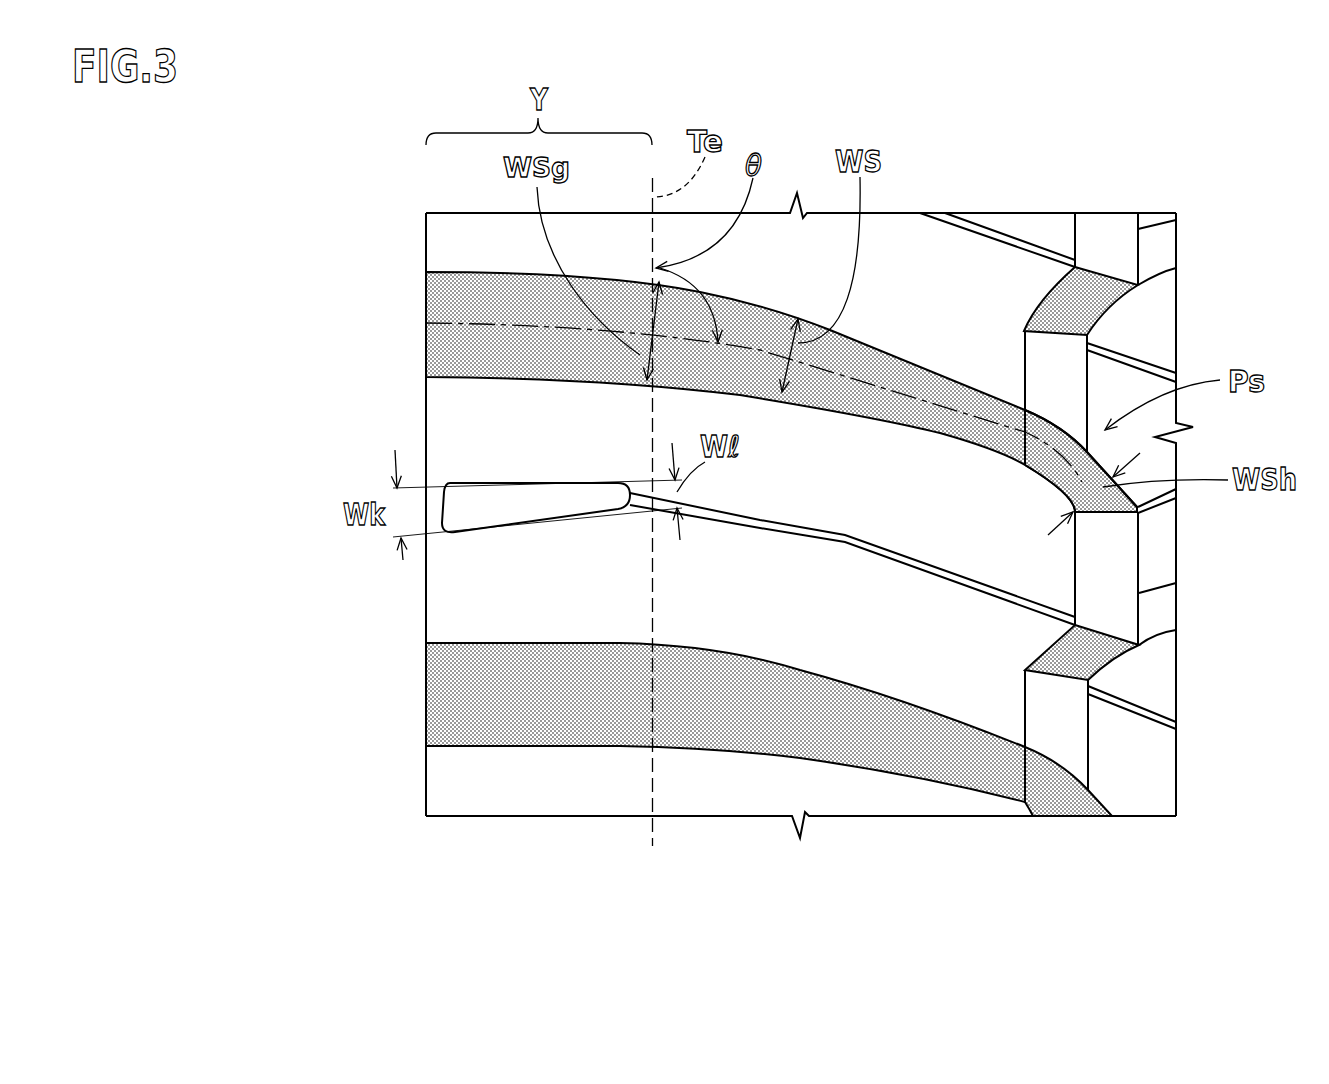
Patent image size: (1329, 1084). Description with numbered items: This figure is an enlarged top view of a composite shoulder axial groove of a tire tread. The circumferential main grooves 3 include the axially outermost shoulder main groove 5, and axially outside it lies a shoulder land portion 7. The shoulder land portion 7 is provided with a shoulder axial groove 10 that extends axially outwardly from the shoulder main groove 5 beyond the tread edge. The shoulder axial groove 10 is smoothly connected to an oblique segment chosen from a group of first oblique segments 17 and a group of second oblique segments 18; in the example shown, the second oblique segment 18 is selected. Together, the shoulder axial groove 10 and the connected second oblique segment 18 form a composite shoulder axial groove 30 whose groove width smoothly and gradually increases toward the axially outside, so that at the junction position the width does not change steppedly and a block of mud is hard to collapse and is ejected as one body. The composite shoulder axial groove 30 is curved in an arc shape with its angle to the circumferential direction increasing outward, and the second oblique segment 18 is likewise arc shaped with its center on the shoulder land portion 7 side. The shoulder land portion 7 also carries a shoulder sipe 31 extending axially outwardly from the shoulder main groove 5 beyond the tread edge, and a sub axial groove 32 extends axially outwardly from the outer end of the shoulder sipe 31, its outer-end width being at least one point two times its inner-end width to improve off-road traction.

The circumferential main groove 3 is at (1048, 463).
The shoulder main groove 5 is at (1103, 232).
The shoulder land portion 7 is at (963, 185).
The shoulder axial groove 10 is at (903, 425).
The first oblique segment 17 is at (1088, 680).
The second oblique segment 18 is at (1052, 493).
The composite shoulder axial groove 30 is at (781, 615).
The shoulder sipe 31 is at (762, 527).
The sub axial groove 32 is at (533, 525).